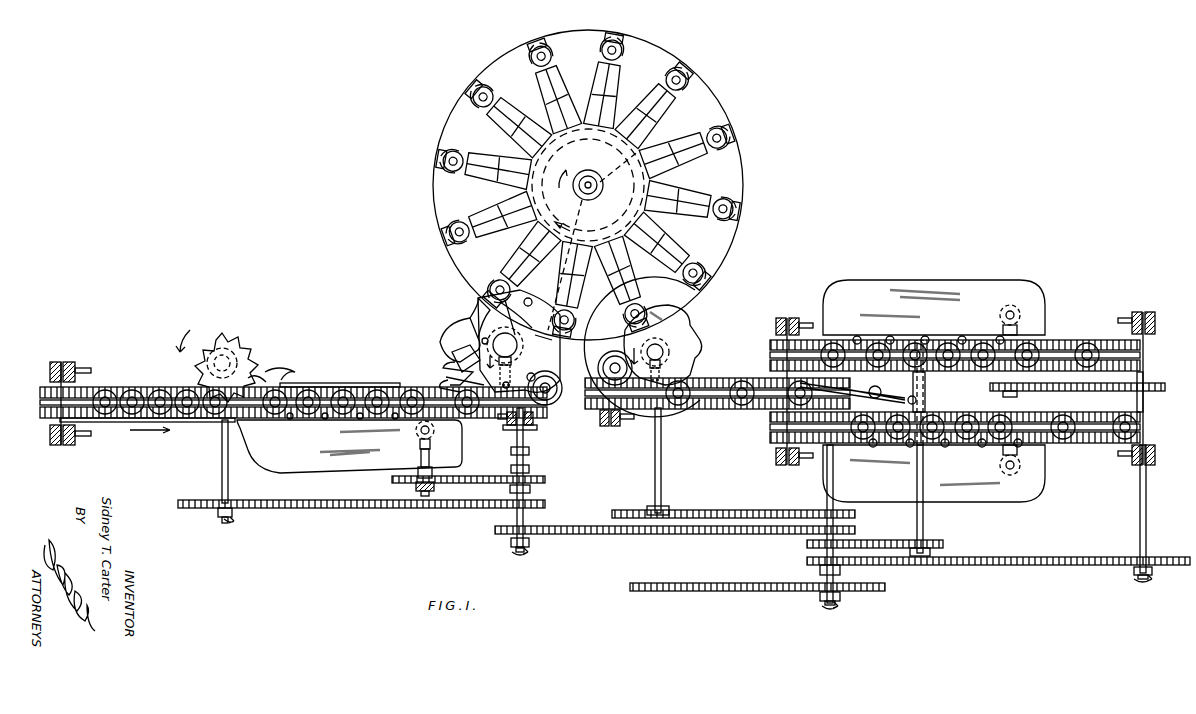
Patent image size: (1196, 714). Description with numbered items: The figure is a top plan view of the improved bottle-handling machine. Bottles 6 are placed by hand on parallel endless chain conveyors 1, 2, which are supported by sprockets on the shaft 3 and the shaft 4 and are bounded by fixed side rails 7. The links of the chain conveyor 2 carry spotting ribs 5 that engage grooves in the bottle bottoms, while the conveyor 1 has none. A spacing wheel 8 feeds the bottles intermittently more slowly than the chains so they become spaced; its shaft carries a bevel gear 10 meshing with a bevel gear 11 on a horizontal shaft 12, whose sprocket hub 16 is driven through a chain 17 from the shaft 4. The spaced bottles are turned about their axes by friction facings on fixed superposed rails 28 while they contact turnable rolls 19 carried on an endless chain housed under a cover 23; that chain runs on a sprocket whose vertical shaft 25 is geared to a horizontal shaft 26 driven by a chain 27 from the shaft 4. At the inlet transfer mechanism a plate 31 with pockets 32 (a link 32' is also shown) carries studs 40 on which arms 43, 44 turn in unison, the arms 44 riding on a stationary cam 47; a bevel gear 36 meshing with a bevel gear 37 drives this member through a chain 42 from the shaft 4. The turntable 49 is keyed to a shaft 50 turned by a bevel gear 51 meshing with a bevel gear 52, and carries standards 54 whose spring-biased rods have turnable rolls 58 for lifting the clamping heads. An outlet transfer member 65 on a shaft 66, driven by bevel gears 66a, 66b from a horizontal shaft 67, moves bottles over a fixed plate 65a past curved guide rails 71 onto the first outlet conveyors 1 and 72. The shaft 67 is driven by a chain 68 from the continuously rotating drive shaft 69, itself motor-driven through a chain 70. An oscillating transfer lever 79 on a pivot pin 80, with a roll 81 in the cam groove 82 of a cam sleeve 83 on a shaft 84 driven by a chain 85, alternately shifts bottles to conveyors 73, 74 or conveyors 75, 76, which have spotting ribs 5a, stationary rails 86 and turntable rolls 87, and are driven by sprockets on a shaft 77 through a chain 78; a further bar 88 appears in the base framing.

The endless chain conveyor 1 is at (40, 392).
The endless chain conveyor 2 is at (40, 415).
The shaft 3 is at (62, 362).
The shaft 4 is at (524, 452).
The spotting ribs 5 is at (40, 403).
The spotting ribs 5a is at (1142, 345).
The bottles 6 is at (500, 190).
The side rails 7 is at (105, 392).
The spacing wheel 8 is at (240, 348).
The bevel gear 10 is at (244, 360).
The bevel gear 11 is at (252, 376).
The horizontal shaft 12 is at (222, 455).
The hub 16 is at (216, 512).
The chain 17 is at (352, 508).
The turnable rolls 19 is at (324, 416).
The cover 23 is at (349, 446).
The vertical shaft 25 is at (436, 430).
The horizontal shaft 26 is at (432, 470).
The chain 27 is at (468, 477).
The rails 28 is at (302, 386).
The plate 31 is at (460, 348).
The pockets 32 is at (500, 356).
The link 32' is at (546, 326).
The bevel gear 36 is at (562, 360).
The bevel gear 37 is at (545, 381).
The studs 40 is at (456, 363).
The chain 42 is at (536, 428).
The arm 43 is at (472, 312).
The arm 44 is at (455, 378).
The stationary cam 47 is at (460, 333).
The turntable 49 is at (735, 107).
The shaft 50 is at (589, 182).
The bevel gear 51 is at (613, 175).
The bevel gear 52 is at (572, 265).
The standards 54 is at (650, 100).
The turnable roll 58 is at (478, 95).
The outlet transfer member 65 is at (686, 322).
The fixed plate 65a is at (621, 357).
The shaft 66 is at (688, 340).
The bevel gear 66a is at (690, 350).
The bevel gear 66b is at (688, 360).
The horizontal shaft 67 is at (661, 436).
The chain 68 is at (744, 512).
The shaft 69 is at (820, 577).
The chain 70 is at (706, 590).
The curved guide rails 71 is at (622, 310).
The companion conveyor 72 is at (722, 410).
The conveyor 73 is at (1156, 328).
The conveyor 74 is at (1142, 360).
The conveyor 75 is at (1142, 412).
The conveyor 76 is at (1142, 430).
The shaft 77 is at (1148, 530).
The chain 78 is at (1010, 558).
The oscillating transfer lever 79 is at (772, 366).
The pivot pin 80 is at (858, 387).
The roll 81 is at (918, 402).
The cam groove 82 is at (926, 391).
The cam sleeve 83 is at (926, 378).
The shaft 84 is at (925, 508).
The chain 85 is at (862, 543).
The stationary rails 86 is at (1018, 387).
The turntable rolls 87 is at (890, 338).
The bar 88 is at (675, 530).